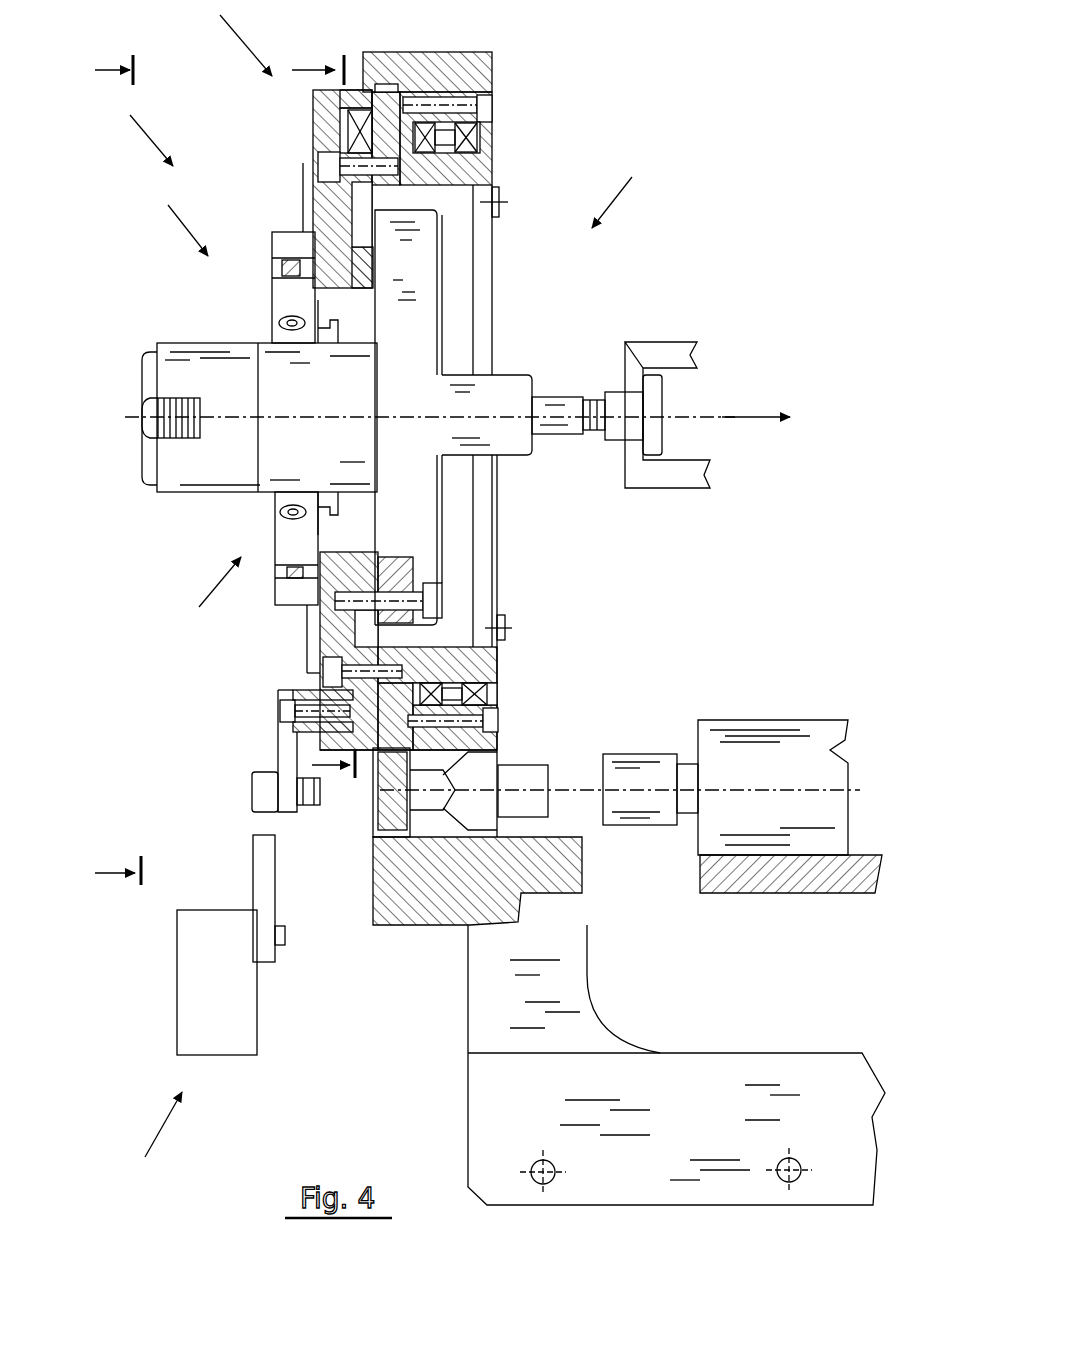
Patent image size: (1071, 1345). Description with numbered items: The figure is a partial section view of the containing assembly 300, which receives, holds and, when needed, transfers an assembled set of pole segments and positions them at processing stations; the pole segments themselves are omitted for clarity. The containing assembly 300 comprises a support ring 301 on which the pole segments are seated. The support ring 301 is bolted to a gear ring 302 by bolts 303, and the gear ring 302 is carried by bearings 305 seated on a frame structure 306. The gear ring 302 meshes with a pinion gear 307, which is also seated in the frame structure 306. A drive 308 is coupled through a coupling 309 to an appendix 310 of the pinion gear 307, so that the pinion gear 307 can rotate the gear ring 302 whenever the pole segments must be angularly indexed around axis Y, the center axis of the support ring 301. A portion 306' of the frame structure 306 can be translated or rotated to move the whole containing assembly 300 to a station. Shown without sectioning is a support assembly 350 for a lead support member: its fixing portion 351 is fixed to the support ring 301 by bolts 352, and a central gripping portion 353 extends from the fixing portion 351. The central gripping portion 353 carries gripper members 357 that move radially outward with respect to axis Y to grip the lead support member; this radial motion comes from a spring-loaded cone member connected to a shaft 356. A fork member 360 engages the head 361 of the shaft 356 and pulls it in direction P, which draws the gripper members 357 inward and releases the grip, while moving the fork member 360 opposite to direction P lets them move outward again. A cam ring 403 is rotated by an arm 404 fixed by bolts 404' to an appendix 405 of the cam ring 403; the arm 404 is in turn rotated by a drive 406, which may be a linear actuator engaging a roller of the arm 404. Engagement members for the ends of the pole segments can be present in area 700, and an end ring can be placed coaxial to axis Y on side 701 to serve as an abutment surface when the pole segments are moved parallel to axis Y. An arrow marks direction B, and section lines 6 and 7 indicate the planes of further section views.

The containing assembly 300 is at (232, 37).
The support ring 301 is at (313, 125).
The gear ring 302 is at (386, 95).
The bolts 303 is at (325, 173).
The bearings 305 is at (487, 127).
The frame structure 306 is at (416, 420).
The portion of frame structure 306' is at (676, 1065).
The pinion gear 307 is at (387, 812).
The drive 308 is at (765, 755).
The coupling 309 is at (627, 777).
The appendix of pinion gear 310 is at (522, 775).
The support assembly 350 is at (218, 595).
The fixing portion 351 is at (412, 463).
The bolts 352 is at (433, 592).
The central gripping portion 353 is at (225, 383).
The shaft 356 is at (573, 408).
The gripper members 357 is at (160, 412).
The fork member 360 is at (660, 355).
The head of shaft 361 is at (657, 427).
The cam ring 403 is at (345, 115).
The arm 404 is at (235, 751).
The bolts 404' is at (251, 715).
The appendix of cam ring 405 is at (297, 690).
The drive 406 is at (162, 1132).
The area 700 is at (618, 192).
The side 701 is at (180, 223).
The section line 6 is at (100, 68).
The section line 7 is at (292, 68).
The direction B is at (143, 133).
The direction P is at (752, 410).
The axis Y is at (227, 410).